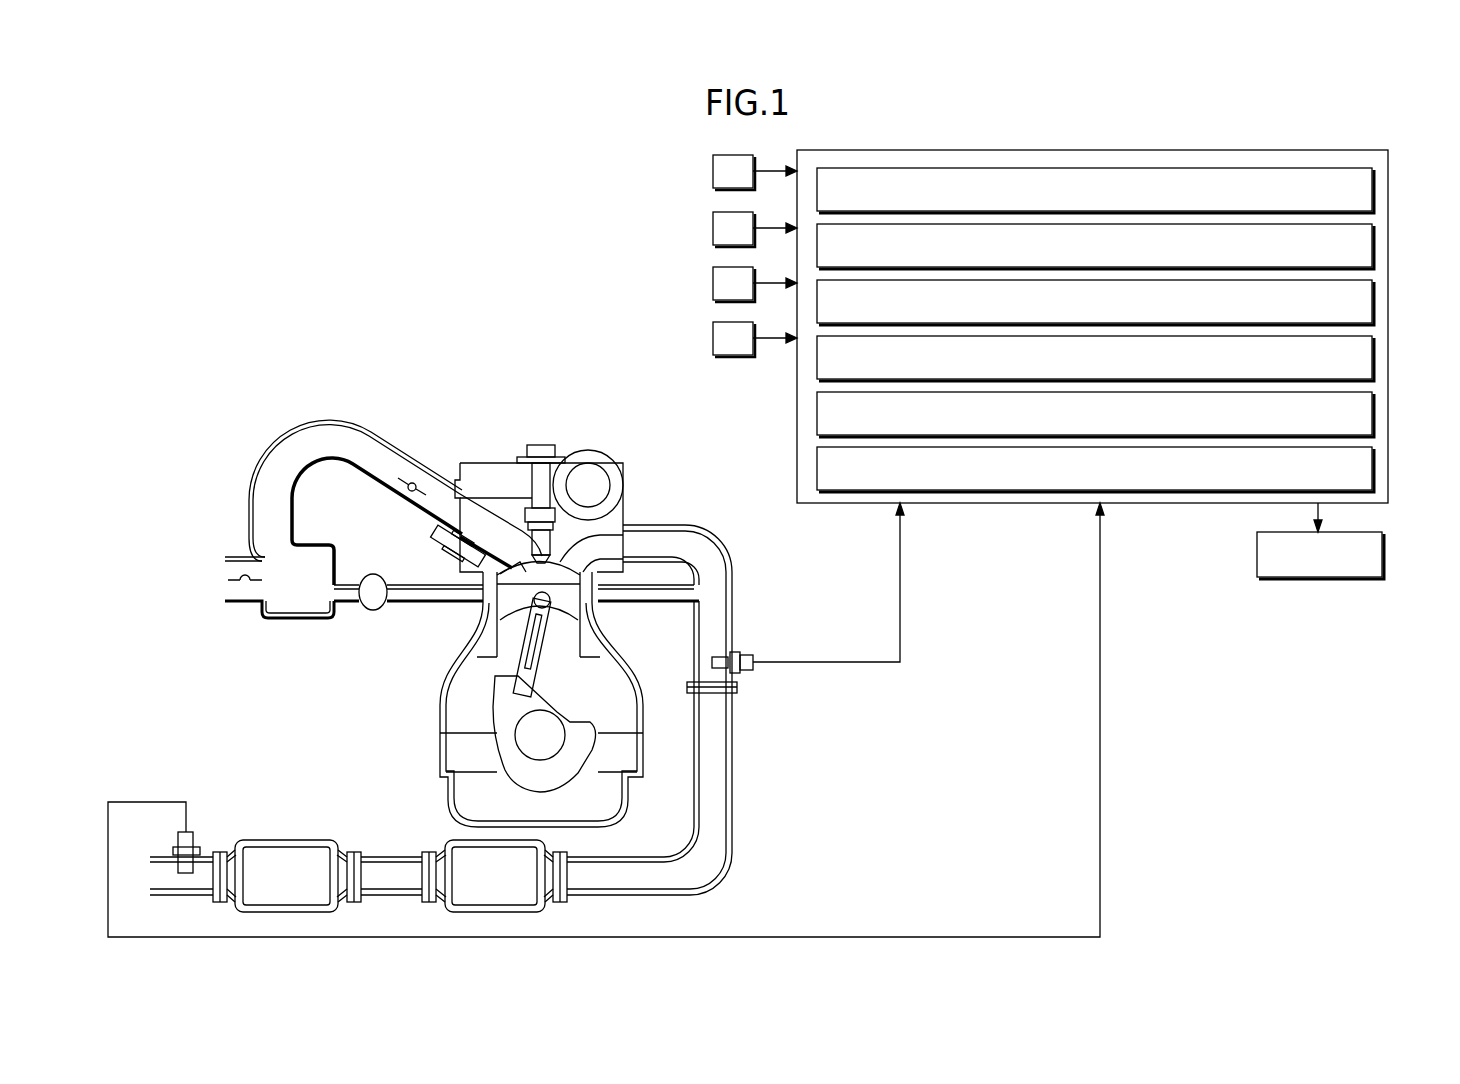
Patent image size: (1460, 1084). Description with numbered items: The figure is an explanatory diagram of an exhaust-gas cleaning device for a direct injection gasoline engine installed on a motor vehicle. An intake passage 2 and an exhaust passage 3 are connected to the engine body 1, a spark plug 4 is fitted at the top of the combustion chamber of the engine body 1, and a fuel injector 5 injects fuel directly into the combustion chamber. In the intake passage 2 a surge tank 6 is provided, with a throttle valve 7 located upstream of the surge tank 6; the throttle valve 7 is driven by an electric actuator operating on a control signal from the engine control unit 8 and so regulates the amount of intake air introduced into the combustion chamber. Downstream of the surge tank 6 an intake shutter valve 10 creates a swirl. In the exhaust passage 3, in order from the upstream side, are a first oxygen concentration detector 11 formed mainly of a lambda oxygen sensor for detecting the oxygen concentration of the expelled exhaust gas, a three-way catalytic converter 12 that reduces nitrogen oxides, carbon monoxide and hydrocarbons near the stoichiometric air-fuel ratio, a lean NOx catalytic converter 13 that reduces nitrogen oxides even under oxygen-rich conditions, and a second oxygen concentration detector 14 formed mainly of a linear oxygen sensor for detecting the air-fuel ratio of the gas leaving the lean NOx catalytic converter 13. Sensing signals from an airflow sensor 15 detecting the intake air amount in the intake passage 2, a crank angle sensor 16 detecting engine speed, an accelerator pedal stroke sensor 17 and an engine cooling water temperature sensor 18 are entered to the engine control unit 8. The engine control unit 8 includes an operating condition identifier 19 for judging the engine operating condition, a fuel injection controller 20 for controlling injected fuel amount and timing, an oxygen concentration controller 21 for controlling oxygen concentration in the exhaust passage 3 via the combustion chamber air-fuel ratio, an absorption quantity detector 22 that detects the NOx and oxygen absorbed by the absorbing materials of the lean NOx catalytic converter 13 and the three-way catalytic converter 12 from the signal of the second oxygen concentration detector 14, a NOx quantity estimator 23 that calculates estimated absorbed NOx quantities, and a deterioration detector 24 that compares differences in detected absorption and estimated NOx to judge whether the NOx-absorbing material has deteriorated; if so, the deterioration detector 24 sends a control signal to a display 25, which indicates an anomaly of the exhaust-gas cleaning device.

The engine body 1 is at (432, 668).
The intake passage 2 is at (268, 447).
The exhaust passage 3 is at (733, 793).
The spark plug 4 is at (524, 515).
The fuel injector 5 is at (452, 548).
The surge tank 6 is at (312, 542).
The throttle valve 7 is at (244, 577).
The engine control unit 8 is at (1338, 150).
The intake shutter valve 10 is at (399, 477).
The first oxygen concentration detector 11 is at (746, 652).
The three-way catalytic converter 12 is at (467, 851).
The lean NOx catalytic converter 13 is at (273, 851).
The second oxygen concentration detector 14 is at (180, 838).
The airflow sensor 15 is at (712, 162).
The crank angle sensor 16 is at (712, 219).
The accelerator pedal stroke sensor 17 is at (712, 275).
The engine cooling water temperature sensor 18 is at (712, 332).
The operating condition identifier 19 is at (1376, 192).
The fuel injection controller 20 is at (1376, 245).
The oxygen concentration controller 21 is at (1376, 299).
The absorption quantity detector 22 is at (1376, 355).
The NOx quantity estimator 23 is at (1376, 417).
The deterioration detector 24 is at (1376, 469).
The display 25 is at (1383, 553).